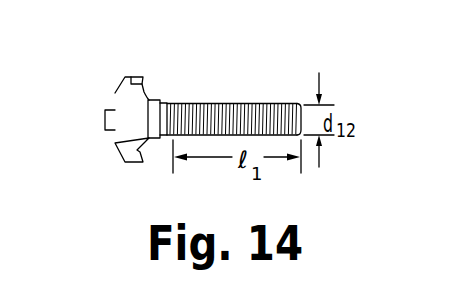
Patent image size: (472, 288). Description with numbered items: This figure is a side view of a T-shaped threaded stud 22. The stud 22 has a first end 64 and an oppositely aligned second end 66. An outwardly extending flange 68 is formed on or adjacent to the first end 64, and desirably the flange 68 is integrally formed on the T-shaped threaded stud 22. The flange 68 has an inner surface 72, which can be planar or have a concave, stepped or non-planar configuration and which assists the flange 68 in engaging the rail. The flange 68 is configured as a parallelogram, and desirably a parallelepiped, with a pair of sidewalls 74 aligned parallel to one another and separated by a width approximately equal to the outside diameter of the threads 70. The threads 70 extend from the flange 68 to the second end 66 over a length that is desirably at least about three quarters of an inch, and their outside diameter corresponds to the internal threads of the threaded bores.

The T-shaped threaded stud 22 is at (279, 21).
The first end 64 is at (106, 118).
The second end 66 is at (298, 103).
The flange 68 is at (142, 56).
The threads 70 is at (213, 103).
The inner surface 72 is at (143, 97).
The sidewalls 74 is at (135, 76).